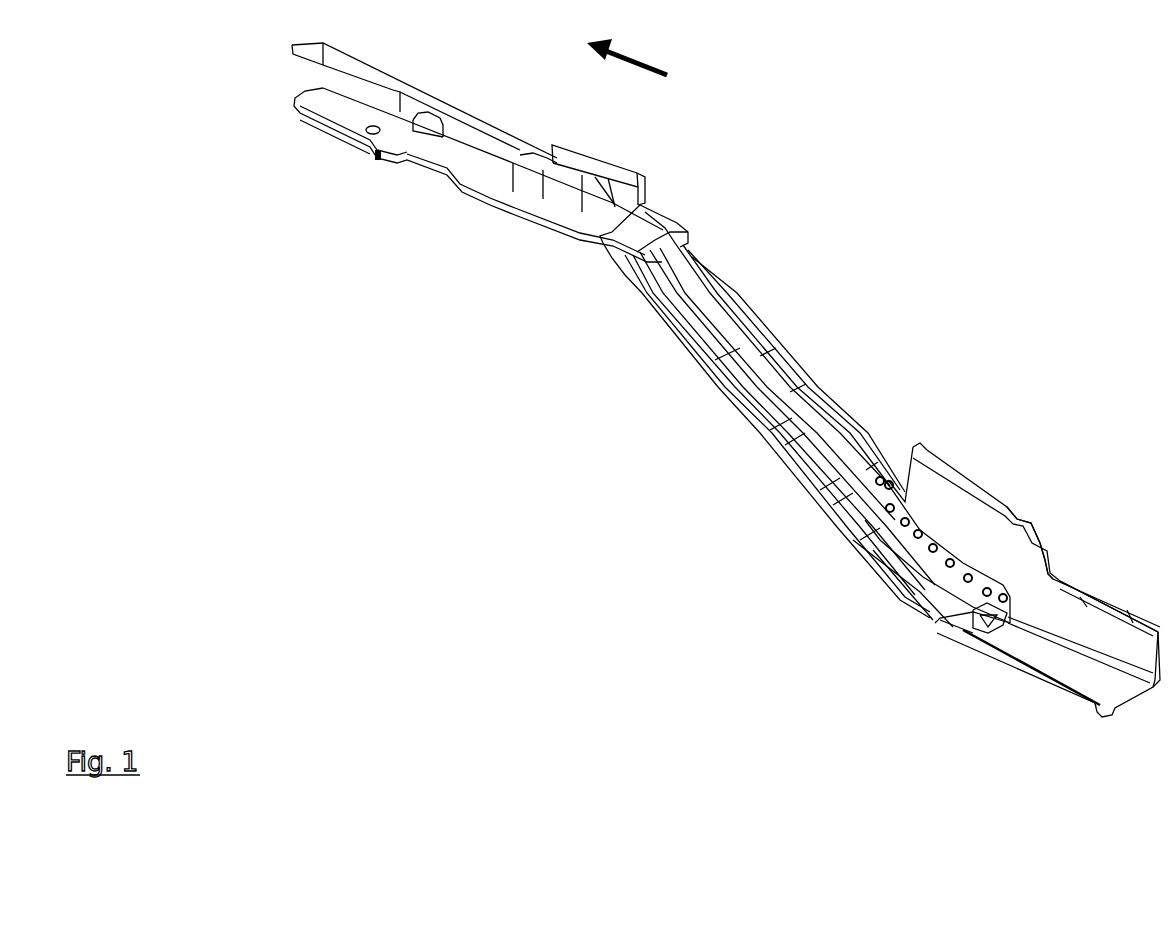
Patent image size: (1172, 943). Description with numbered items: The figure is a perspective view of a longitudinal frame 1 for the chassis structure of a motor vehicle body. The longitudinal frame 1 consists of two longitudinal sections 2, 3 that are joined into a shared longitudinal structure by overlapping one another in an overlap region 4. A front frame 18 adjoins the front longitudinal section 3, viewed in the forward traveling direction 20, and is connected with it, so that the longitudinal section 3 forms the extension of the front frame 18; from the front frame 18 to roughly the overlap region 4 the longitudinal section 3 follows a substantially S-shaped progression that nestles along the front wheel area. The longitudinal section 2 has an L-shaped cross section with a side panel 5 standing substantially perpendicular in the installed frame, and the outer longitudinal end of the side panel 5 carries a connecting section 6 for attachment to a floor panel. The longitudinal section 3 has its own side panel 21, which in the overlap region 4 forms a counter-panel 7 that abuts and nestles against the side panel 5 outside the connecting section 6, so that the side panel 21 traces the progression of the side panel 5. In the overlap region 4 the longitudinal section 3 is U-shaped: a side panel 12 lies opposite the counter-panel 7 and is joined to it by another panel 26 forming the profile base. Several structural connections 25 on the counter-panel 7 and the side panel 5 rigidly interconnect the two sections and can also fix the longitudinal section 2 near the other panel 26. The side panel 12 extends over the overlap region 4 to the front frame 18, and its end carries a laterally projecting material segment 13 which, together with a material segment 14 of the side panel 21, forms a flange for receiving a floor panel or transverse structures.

The longitudinal frame 1 is at (827, 187).
The longitudinal section 2 is at (977, 520).
The longitudinal section 3 is at (748, 350).
The overlap region 4 is at (830, 535).
The side panel 5 is at (1057, 610).
The connecting section 6 is at (1007, 513).
The counter-panel 7 is at (912, 525).
The side panel 12 is at (920, 592).
The material segment 13 is at (803, 470).
The material segment 14 is at (852, 422).
The front frame 18 is at (520, 197).
The forward traveling direction 20 is at (637, 55).
The side panel 21 is at (808, 417).
The structural connections 25 is at (947, 567).
The other panel 26 is at (993, 623).